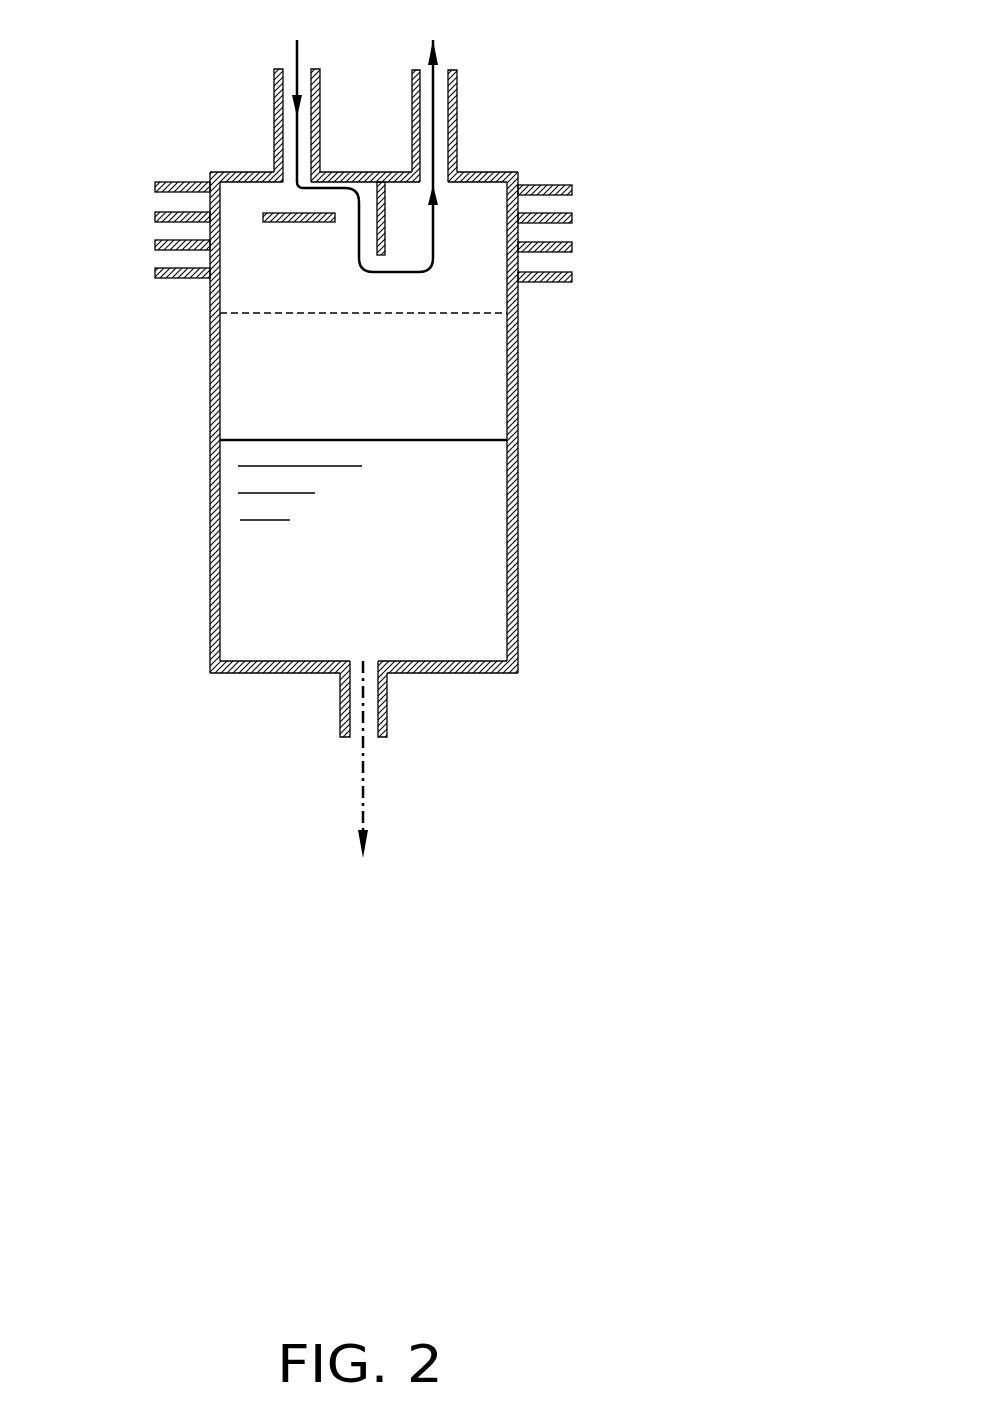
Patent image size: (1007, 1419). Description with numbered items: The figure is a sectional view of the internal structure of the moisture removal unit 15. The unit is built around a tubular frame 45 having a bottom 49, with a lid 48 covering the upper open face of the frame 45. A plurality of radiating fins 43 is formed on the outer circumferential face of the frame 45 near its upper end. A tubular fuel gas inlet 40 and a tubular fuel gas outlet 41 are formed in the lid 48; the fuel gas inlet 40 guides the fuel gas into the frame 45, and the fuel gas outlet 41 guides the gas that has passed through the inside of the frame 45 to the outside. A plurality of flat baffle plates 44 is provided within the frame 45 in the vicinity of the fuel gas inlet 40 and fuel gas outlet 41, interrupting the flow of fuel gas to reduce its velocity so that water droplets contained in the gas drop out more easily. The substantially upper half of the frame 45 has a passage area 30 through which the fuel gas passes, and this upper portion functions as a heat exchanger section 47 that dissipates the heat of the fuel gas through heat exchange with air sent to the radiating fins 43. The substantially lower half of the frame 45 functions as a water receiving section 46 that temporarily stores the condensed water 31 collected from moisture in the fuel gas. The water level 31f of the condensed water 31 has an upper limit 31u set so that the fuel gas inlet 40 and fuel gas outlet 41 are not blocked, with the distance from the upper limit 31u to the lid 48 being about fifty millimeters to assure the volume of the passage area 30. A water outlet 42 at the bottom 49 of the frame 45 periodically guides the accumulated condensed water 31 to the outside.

The moisture removal unit 15 is at (362, 443).
The passage area 30 is at (483, 210).
The condensed water 31 is at (487, 570).
The water level 31f is at (333, 440).
The upper limit of the water level 31u is at (410, 313).
The fuel gas inlet 40 is at (274, 115).
The fuel gas outlet 41 is at (457, 90).
The water outlet 42 is at (387, 705).
The radiating fins 43 is at (570, 277).
The baffle plates 44 is at (377, 228).
The frame 45 is at (518, 348).
The water receiving section 46 is at (160, 563).
The heat exchanger section 47 is at (145, 303).
The lid 48 is at (478, 172).
The bottom 49 is at (272, 673).